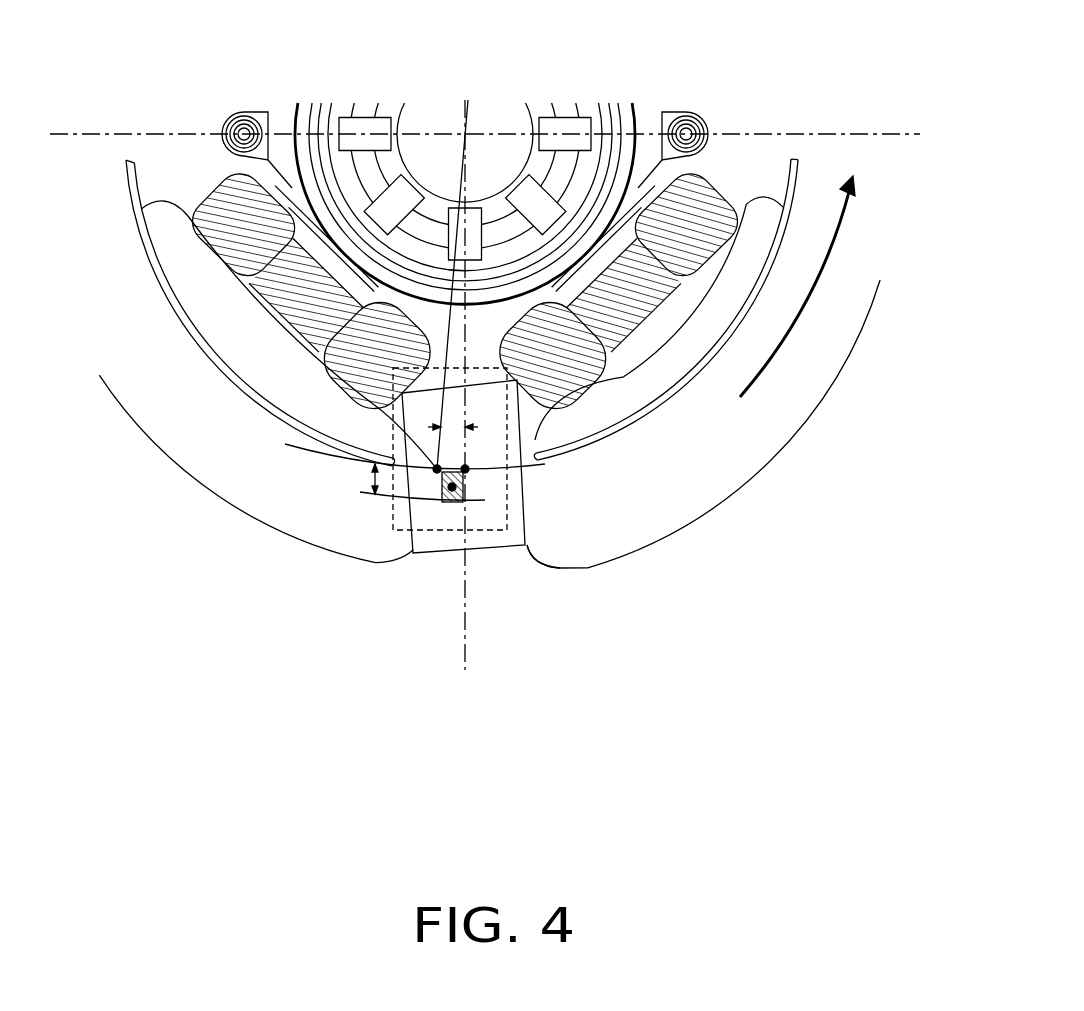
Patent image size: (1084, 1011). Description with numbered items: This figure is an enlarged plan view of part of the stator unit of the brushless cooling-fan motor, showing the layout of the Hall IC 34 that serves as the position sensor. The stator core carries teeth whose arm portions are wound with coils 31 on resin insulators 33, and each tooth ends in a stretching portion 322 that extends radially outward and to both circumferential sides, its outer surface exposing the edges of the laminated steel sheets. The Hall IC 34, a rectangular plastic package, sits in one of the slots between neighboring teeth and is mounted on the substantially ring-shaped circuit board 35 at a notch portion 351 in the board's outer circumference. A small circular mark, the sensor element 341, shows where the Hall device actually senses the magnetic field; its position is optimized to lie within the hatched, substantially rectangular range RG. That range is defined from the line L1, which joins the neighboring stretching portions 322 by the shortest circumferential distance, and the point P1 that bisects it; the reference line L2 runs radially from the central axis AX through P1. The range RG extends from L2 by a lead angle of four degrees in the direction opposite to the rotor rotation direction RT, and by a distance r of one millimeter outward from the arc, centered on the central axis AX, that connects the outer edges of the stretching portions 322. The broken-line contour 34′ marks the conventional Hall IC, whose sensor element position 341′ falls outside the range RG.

The coil 31 is at (707, 150).
The insulator 33 is at (290, 397).
The stretching portion 322 is at (133, 160).
The Hall IC 34 is at (508, 545).
The contour of conventional Hall IC 34′ is at (393, 530).
The sensor element 341 is at (437, 473).
The position of conventional sensor element 341′ is at (444, 503).
The circuit board 35 is at (698, 515).
The notch portion 351 is at (530, 560).
The central axis AX is at (466, 132).
The rotation direction of the rotor magnet RT is at (833, 260).
The range RG is at (452, 503).
The point P1 is at (453, 491).
The line L1 is at (467, 473).
The reference line L2 is at (463, 618).
The distance r is at (362, 478).